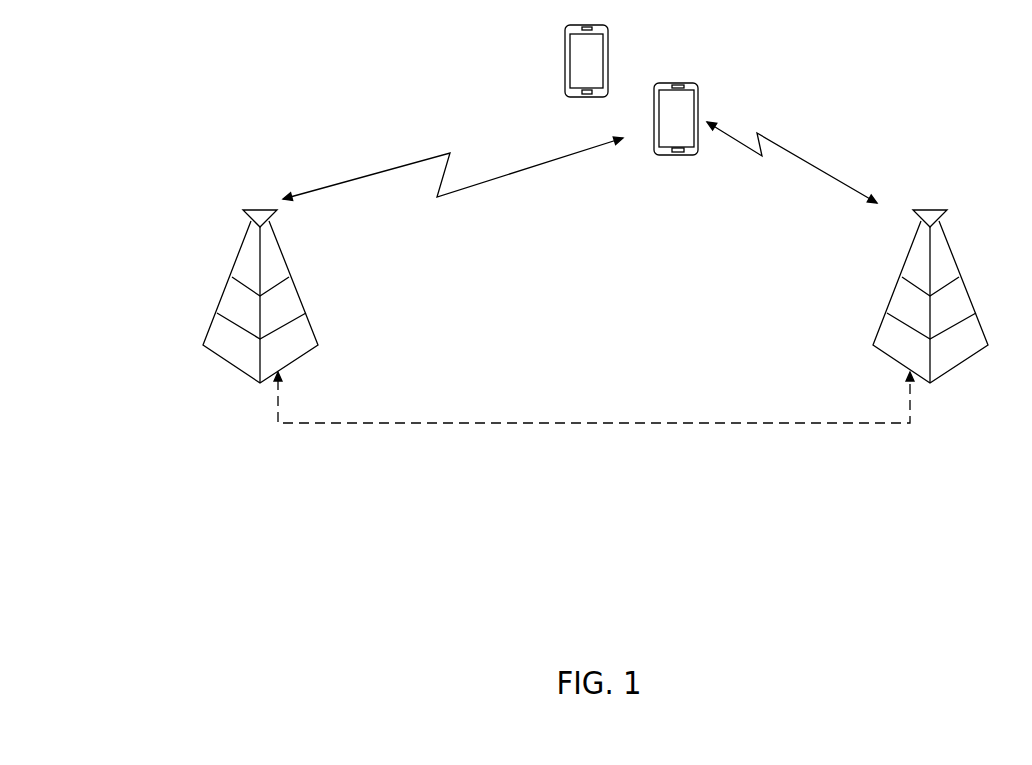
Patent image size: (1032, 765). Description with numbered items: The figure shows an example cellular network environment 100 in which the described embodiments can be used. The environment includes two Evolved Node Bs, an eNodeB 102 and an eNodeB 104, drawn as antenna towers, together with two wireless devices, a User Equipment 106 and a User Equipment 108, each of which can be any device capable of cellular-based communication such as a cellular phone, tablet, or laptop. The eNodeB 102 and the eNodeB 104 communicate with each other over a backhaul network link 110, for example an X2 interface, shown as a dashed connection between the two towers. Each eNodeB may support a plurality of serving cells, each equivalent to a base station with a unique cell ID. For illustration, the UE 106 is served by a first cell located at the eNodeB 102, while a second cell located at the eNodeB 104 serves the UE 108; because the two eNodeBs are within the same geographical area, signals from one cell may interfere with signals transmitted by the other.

The cellular network environment 100 is at (225, 565).
The eNodeB 102 is at (978, 353).
The eNodeB 104 is at (220, 358).
The User Equipment 106 is at (672, 155).
The User Equipment 108 is at (566, 57).
The backhaul network link 110 is at (608, 424).